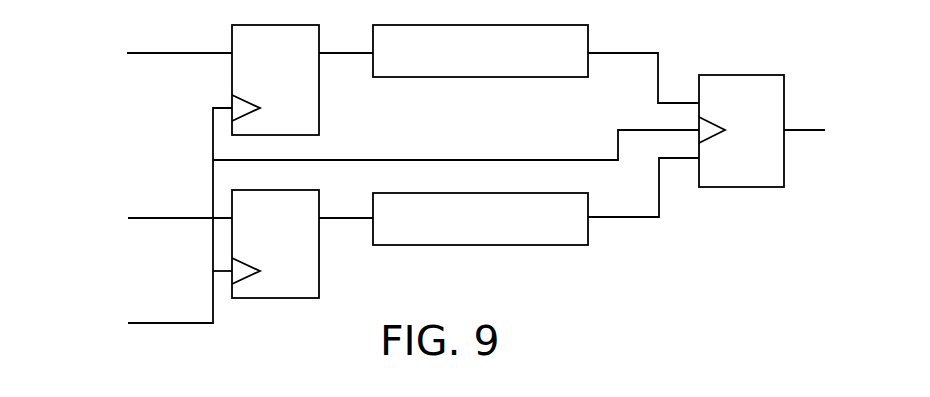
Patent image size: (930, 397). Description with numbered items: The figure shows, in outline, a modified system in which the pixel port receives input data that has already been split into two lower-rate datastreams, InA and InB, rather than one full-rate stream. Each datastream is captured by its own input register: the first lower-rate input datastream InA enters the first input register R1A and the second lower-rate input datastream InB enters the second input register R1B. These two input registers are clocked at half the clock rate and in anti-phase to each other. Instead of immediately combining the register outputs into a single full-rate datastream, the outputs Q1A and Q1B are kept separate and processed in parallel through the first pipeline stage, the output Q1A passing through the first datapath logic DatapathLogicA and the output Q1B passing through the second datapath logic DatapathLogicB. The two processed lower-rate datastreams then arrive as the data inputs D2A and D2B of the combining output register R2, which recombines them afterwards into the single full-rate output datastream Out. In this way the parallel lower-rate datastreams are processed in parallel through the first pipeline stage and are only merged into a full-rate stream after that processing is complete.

The first input register R1A is at (275, 68).
The second input register R1B is at (275, 232).
The combining output register R2 is at (741, 115).
The first-pipeline-stage datapath logic for datastream A DatapathLogicA is at (480, 51).
The first-pipeline-stage datapath logic for datastream B DatapathLogicB is at (480, 219).
The first lower-rate input datastream InA is at (157, 54).
The second lower-rate input datastream InB is at (157, 219).
The first input register output Q1A is at (346, 37).
The second input register output Q1B is at (346, 202).
The first combining-register data input D2A is at (643, 62).
The second combining-register data input D2B is at (643, 187).
The full-rate output datastream Out is at (821, 114).